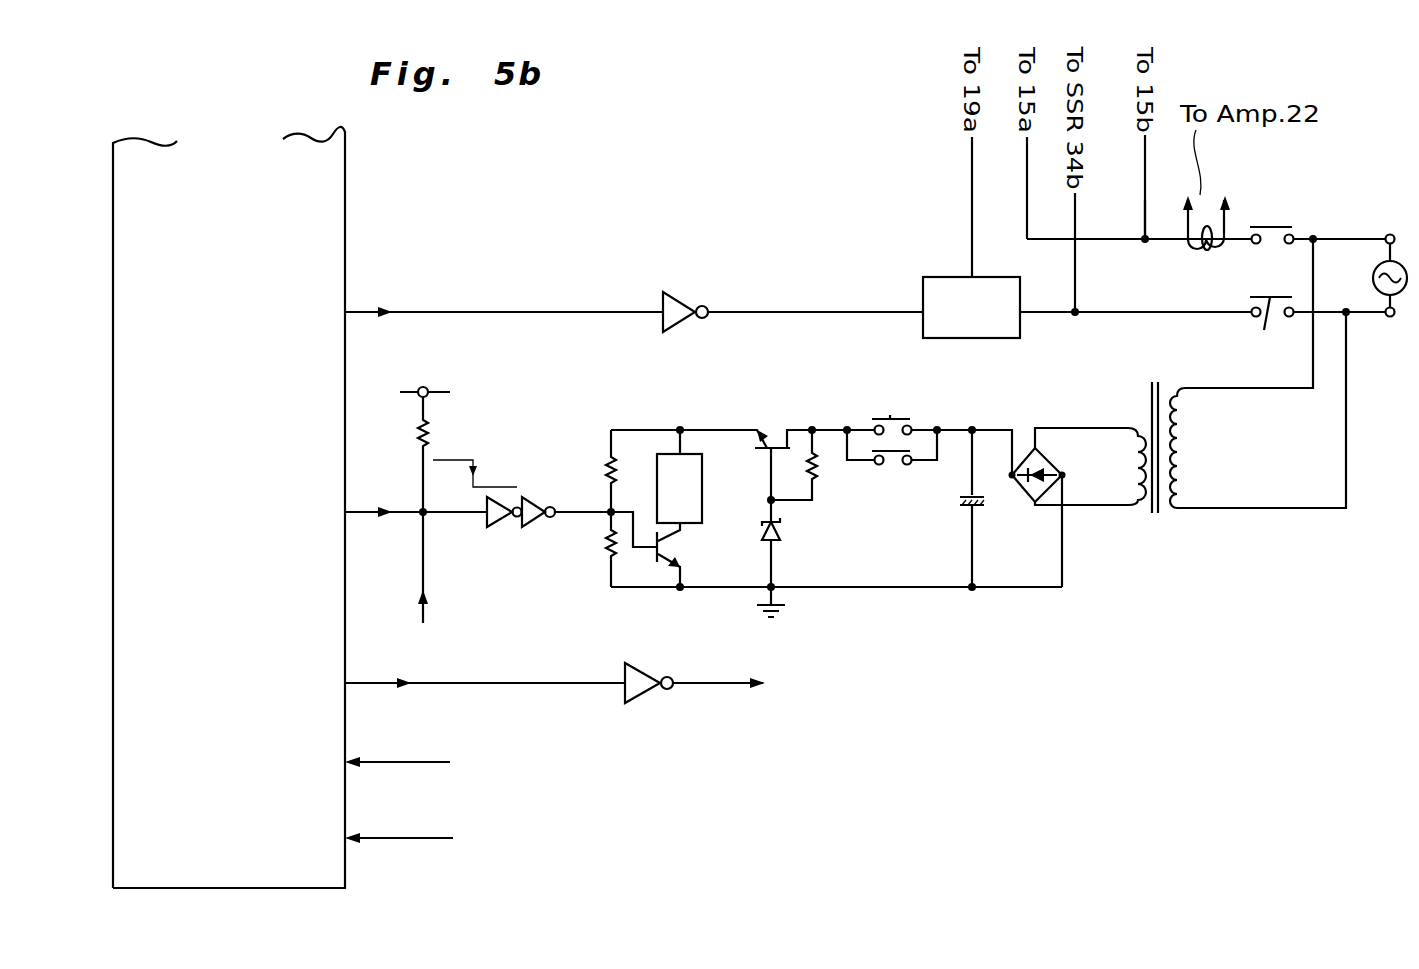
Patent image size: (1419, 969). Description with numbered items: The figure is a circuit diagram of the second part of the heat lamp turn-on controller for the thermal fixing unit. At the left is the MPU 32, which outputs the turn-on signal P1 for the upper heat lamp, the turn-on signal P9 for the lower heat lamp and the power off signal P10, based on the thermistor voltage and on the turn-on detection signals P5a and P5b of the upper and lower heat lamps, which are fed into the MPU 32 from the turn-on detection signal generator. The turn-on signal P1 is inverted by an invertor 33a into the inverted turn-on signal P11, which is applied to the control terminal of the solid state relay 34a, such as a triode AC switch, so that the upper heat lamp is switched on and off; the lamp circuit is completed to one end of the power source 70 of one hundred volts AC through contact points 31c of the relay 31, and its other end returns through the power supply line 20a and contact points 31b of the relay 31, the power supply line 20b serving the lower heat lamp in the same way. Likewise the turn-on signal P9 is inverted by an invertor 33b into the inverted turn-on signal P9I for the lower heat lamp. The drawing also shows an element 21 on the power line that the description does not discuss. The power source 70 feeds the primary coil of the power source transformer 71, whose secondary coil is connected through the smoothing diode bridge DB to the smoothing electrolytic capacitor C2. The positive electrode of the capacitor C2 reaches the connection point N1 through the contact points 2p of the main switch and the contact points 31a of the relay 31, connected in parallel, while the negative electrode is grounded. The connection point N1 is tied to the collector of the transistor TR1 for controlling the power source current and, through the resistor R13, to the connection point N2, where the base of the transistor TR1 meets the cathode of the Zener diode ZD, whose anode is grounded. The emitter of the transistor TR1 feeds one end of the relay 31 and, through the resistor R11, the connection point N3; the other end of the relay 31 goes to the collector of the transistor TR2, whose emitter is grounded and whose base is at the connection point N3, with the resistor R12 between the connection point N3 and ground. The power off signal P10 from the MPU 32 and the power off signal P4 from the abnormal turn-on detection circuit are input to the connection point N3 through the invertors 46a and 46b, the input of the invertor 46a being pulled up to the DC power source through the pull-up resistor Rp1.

The MPU 32 is at (345, 243).
The turn-on signal for the upper heat lamp P1 is at (345, 316).
The invertor 33a is at (678, 300).
The inverted turn-on signal for the upper heat lamp P11 is at (810, 312).
The solid state relay (SSR) 34a is at (985, 338).
The power supply line 20a is at (1108, 239).
The power supply line 20b is at (1143, 212).
The current detecting coil 21 is at (1210, 250).
The contact points of the relay 31b is at (1272, 227).
The contact points of the relay 31c is at (1264, 330).
The power source 70 is at (1373, 282).
The power source transformer 71 is at (1156, 382).
The smoothing diode bridge DB is at (1045, 462).
The smoothing electrolytic capacitor C2 is at (985, 505).
The contact points of the main switch 2p is at (900, 417).
The contact points of the relay 31a is at (893, 454).
The connection point N1 is at (847, 428).
The resistor R13 is at (818, 462).
The transistor for controlling a power source current TR1 is at (768, 440).
The connection point N2 is at (769, 500).
The Zener diode ZD is at (782, 530).
The relay 31 is at (690, 452).
The transistor TR2 is at (672, 555).
The resistor R11 is at (607, 468).
The resistor R12 is at (584, 549).
The connection point N3 is at (607, 512).
The power off signal P10 is at (345, 515).
The invertor 46a is at (487, 527).
The invertor 46b is at (525, 527).
The pull-up resistor Rp1 is at (405, 449).
The power off signal P4 is at (419, 584).
The turn-on signal for the lower heat lamp P9 is at (345, 688).
The invertor 33b is at (640, 672).
The inverted turn-on signal for the lower heat lamp P9I is at (741, 685).
The turn-on detection signal of the upper heat lamp P5a is at (423, 762).
The turn-on detection signal of the lower heat lamp P5b is at (424, 837).